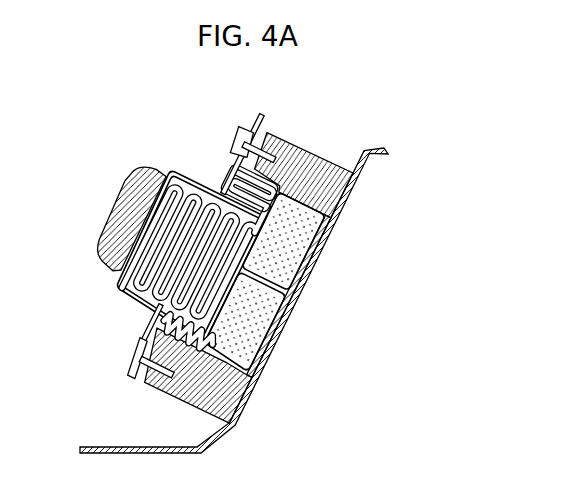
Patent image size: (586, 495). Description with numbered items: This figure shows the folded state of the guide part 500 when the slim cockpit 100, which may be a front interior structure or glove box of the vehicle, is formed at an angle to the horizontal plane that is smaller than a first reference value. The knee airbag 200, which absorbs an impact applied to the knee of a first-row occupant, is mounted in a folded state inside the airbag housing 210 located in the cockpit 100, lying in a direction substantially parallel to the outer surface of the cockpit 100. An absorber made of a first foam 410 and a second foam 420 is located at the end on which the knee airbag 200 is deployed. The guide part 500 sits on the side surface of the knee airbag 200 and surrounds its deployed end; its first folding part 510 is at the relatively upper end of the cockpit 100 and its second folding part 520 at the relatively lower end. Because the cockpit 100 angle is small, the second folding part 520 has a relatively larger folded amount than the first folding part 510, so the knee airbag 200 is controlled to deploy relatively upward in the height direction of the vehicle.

The cockpit 100 is at (377, 150).
The knee airbag 200 is at (198, 197).
The airbag housing 210 is at (312, 156).
The first foam 410 is at (300, 253).
The second foam 420 is at (262, 332).
The guide part 500 is at (264, 380).
The first folding part 510 is at (230, 182).
The second folding part 520 is at (157, 330).